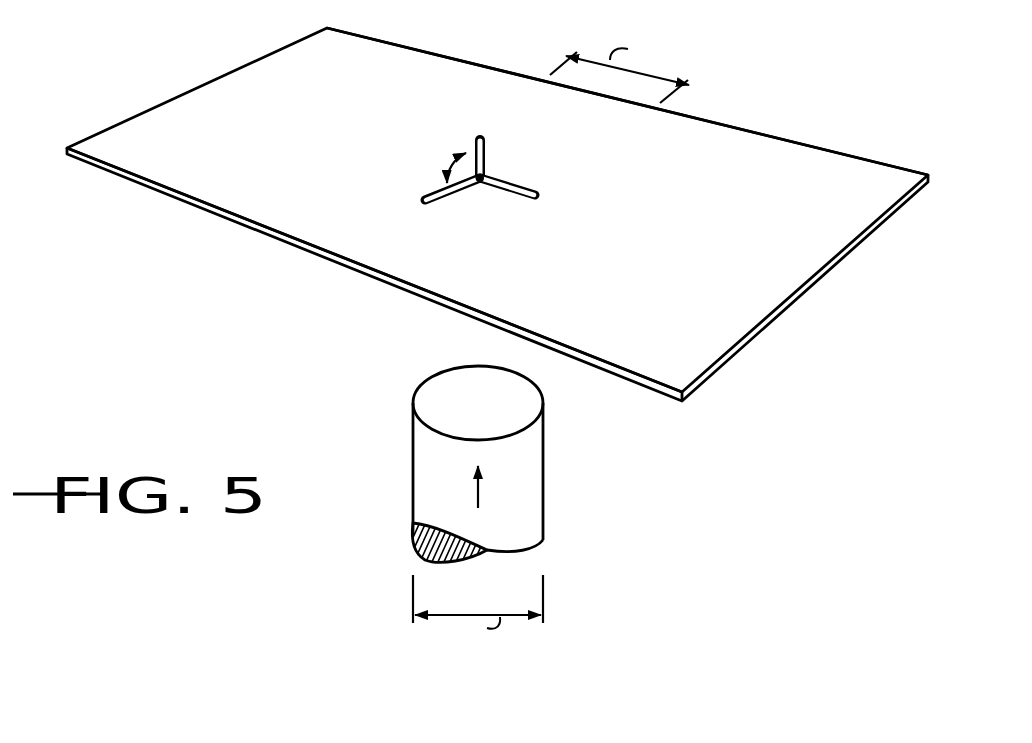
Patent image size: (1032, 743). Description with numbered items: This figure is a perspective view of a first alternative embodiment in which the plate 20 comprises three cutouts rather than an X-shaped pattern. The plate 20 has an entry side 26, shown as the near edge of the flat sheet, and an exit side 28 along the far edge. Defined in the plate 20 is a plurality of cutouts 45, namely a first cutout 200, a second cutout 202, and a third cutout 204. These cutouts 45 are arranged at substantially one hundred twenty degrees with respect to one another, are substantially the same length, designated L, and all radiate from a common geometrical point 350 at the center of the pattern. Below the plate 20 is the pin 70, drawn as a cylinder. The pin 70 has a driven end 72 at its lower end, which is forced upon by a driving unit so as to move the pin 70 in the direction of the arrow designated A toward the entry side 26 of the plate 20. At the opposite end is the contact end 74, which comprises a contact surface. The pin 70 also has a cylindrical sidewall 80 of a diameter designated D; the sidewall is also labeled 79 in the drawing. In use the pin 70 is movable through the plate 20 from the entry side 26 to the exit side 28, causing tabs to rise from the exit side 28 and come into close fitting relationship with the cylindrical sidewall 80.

The plate 20 is at (497, 214).
The entry side 26 is at (193, 200).
The exit side 28 is at (762, 152).
The cutouts 45 is at (471, 176).
The first cutout 200 is at (430, 192).
The second cutout 202 is at (487, 154).
The third cutout 204 is at (508, 197).
The common geometrical point 350 is at (480, 183).
The pin 70 is at (476, 505).
The driven end 72 is at (531, 558).
The contact end 74 is at (508, 420).
The left side wall 79 is at (426, 472).
The cylindrical sidewall 80 is at (522, 493).